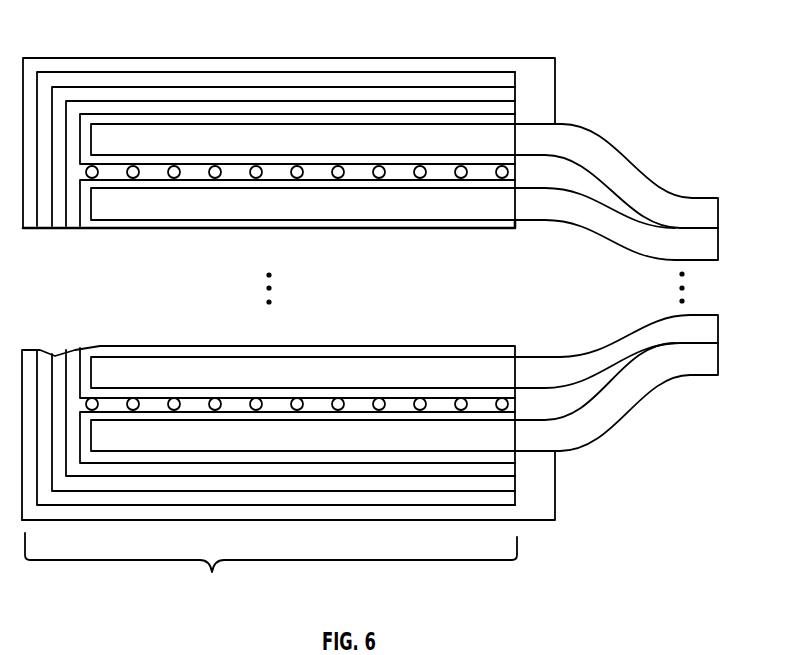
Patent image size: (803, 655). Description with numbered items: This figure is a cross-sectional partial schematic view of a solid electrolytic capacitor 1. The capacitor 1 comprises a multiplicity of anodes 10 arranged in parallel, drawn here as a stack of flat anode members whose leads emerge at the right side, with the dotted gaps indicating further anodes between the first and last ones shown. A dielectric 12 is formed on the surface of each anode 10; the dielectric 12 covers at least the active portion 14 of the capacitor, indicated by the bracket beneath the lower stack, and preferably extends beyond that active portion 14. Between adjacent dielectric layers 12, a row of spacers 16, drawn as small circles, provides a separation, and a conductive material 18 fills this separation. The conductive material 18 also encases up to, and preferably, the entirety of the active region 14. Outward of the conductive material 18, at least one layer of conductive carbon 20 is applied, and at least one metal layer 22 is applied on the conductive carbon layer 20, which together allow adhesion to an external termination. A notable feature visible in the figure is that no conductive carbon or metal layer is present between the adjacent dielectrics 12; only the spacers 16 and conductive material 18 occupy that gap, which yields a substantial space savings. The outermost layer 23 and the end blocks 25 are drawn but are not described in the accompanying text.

The capacitor 1 is at (281, 54).
The anodes 10 is at (697, 215).
The dielectric 12 is at (460, 230).
The active portion 14 is at (213, 572).
The spacers 16 is at (175, 178).
The conductive material 18 is at (80, 168).
The conductive carbon layer 20 is at (197, 92).
The metal layer 22 is at (47, 80).
The outer jacket 23 is at (515, 63).
The end termination block 25 is at (535, 105).